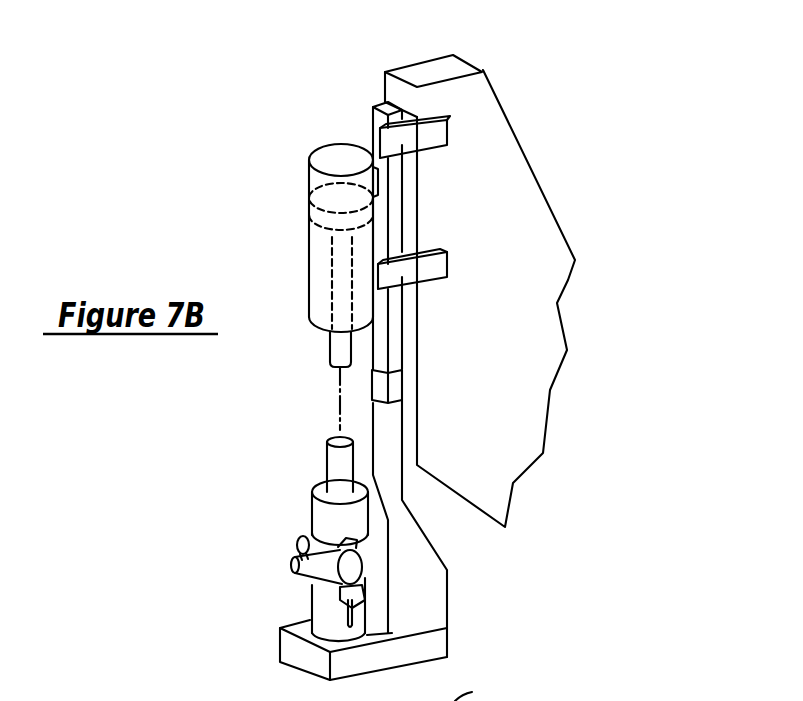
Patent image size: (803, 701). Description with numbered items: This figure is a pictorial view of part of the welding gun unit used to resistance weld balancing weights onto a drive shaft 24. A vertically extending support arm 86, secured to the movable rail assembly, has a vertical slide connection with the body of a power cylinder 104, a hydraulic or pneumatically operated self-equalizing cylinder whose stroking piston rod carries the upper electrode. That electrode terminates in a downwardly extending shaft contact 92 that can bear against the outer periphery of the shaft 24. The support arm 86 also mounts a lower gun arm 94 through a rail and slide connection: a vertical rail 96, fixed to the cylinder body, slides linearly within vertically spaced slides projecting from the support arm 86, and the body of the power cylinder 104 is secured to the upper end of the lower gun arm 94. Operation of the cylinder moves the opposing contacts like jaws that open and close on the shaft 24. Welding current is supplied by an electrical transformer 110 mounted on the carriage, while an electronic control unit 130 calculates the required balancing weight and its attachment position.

The drive shaft 24 is at (300, 545).
The support arm 86 is at (483, 142).
The shaft contact 92 is at (313, 504).
The lower gun arm 94 is at (393, 427).
The vertical rail 96 is at (390, 192).
The power cylinder 104 is at (305, 228).
The electrical transformer 110 is at (313, 603).
The electronic control unit 130 is at (483, 700).